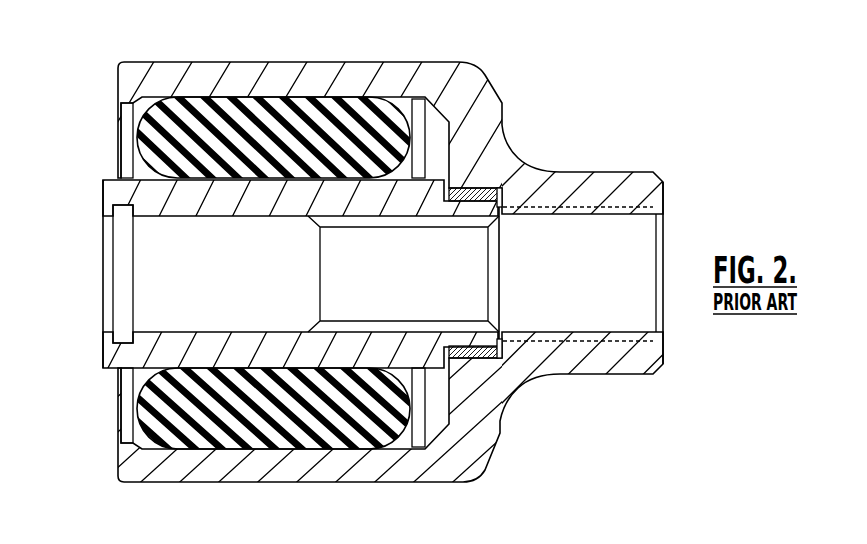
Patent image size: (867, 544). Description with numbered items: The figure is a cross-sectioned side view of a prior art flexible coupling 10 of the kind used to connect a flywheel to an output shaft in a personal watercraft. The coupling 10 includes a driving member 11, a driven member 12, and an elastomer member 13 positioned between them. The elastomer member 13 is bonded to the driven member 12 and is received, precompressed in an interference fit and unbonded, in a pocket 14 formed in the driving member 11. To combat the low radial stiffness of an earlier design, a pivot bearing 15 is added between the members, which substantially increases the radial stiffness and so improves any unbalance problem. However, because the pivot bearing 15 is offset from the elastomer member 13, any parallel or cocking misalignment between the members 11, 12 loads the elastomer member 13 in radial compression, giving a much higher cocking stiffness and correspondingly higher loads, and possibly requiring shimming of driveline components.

The coupling 10 is at (433, 272).
The driving member 11 is at (132, 77).
The driven member 12 is at (117, 196).
The elastomer member 13 is at (140, 143).
The pocket 14 is at (409, 99).
The pivot bearing 15 is at (481, 181).